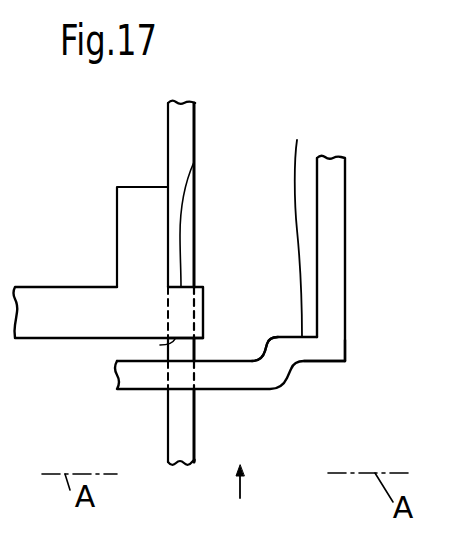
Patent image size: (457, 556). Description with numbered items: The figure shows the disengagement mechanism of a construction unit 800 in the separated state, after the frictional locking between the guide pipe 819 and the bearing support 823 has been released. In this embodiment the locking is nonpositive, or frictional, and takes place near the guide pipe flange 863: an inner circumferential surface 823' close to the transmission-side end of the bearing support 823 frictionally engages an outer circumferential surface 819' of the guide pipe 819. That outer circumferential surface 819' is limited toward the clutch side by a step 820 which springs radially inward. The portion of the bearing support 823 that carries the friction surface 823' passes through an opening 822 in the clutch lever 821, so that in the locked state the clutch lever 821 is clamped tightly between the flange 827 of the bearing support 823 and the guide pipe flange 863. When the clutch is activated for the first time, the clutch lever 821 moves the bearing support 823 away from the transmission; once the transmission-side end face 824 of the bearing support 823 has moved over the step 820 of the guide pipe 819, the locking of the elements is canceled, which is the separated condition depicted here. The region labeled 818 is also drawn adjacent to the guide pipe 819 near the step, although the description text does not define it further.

The construction unit 800 is at (241, 504).
The strip portion 818 is at (325, 345).
The guide pipe 819 is at (230, 392).
The outer circumferential surface 819' is at (313, 220).
The step 820 is at (258, 351).
The clutch lever 821 is at (182, 123).
The opening 822 is at (194, 162).
The bearing support 823 is at (109, 278).
The inner circumferential surface 823' is at (100, 372).
The transmission-side end face 824 is at (203, 298).
The flange 827 is at (145, 200).
The guide pipe flange 863 is at (335, 197).